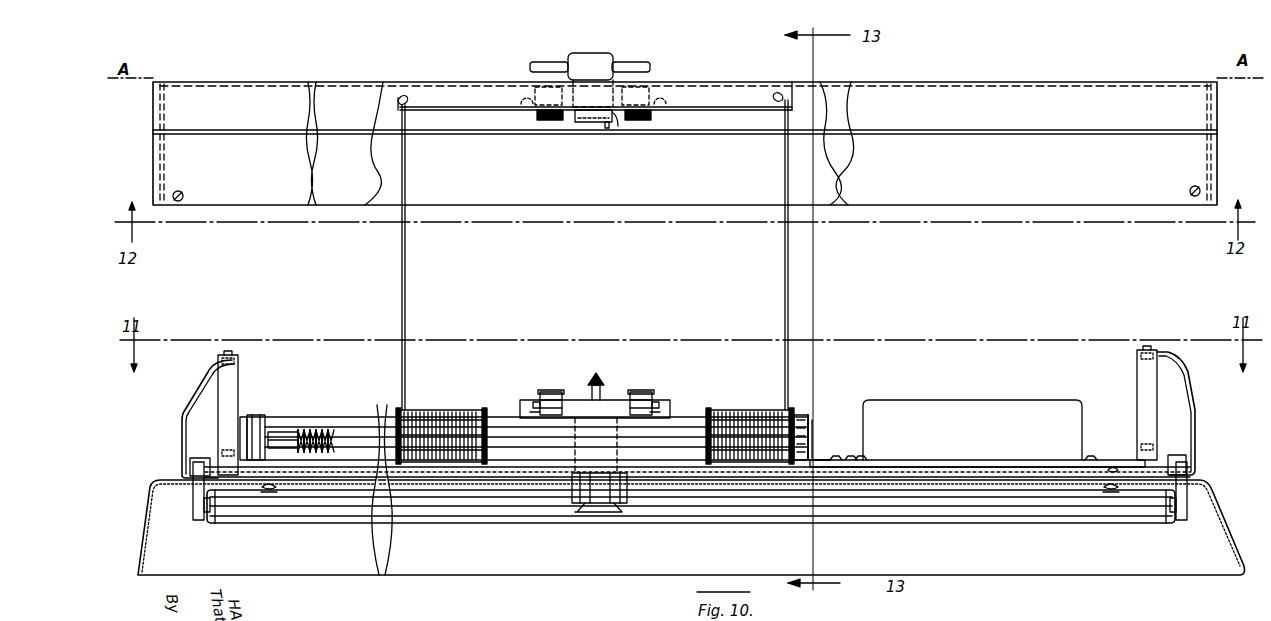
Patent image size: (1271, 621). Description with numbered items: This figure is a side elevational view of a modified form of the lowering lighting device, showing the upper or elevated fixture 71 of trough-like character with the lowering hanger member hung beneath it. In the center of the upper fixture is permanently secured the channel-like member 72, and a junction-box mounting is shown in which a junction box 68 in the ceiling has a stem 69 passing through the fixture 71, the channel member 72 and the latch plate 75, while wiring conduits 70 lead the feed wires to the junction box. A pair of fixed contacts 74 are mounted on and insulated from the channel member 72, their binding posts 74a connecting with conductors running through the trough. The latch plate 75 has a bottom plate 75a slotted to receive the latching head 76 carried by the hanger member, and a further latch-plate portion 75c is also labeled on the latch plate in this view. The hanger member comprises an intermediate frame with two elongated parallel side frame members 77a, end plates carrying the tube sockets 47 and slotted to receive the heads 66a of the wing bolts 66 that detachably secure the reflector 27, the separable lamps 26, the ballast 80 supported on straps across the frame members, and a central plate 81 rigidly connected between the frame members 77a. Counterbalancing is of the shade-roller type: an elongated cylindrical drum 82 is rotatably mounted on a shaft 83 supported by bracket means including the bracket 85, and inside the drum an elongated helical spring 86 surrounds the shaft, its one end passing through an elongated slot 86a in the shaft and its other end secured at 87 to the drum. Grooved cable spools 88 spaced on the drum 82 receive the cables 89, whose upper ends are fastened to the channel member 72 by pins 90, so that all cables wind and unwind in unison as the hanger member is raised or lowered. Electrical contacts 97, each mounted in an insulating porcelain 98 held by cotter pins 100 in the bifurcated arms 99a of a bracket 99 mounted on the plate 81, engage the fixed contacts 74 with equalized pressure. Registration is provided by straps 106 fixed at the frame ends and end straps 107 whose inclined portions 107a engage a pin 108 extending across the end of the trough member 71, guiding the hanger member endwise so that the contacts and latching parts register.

The lamps 26 is at (1028, 524).
The reflector 27 is at (1224, 502).
The tube sockets 47 is at (192, 506).
The wing bolts 66 is at (270, 492).
The heads of the wing bolts 66a is at (1108, 467).
The junction box 68 is at (590, 52).
The stem 69 is at (607, 80).
The wiring conduits 70 is at (530, 64).
The upper or elevated fixture 71 is at (245, 100).
The channel-like member 72 is at (754, 92).
The fixed contacts 74 is at (540, 120).
The binding posts 74a is at (666, 97).
The latch plate 75 is at (618, 126).
The bottom plate 75a is at (580, 122).
The lever pin 75c is at (608, 128).
The latching head 76 is at (598, 375).
The side frame members 77a is at (878, 462).
The ballast 80 is at (972, 430).
The plate 81 is at (447, 478).
The elongated cylindrical drum 82 is at (354, 426).
The shaft 83 is at (262, 415).
The bracket 85 is at (240, 436).
The helical springs 86 is at (320, 428).
The elongated slot 86a is at (282, 432).
The spring securing point 87 is at (814, 414).
The cable spools 88 is at (481, 408).
The cables 89 is at (405, 262).
The pins 90 is at (408, 105).
The electrical contacts 97 is at (549, 392).
The insulating porcelain 98 is at (538, 412).
The bracket 99 is at (595, 409).
The bifurcated arms 99a is at (562, 394).
The cotter pins 100 is at (534, 403).
The straps 106 is at (238, 376).
The straps 107 is at (182, 443).
The inclined portion 107a is at (192, 396).
The pin 108 is at (184, 195).